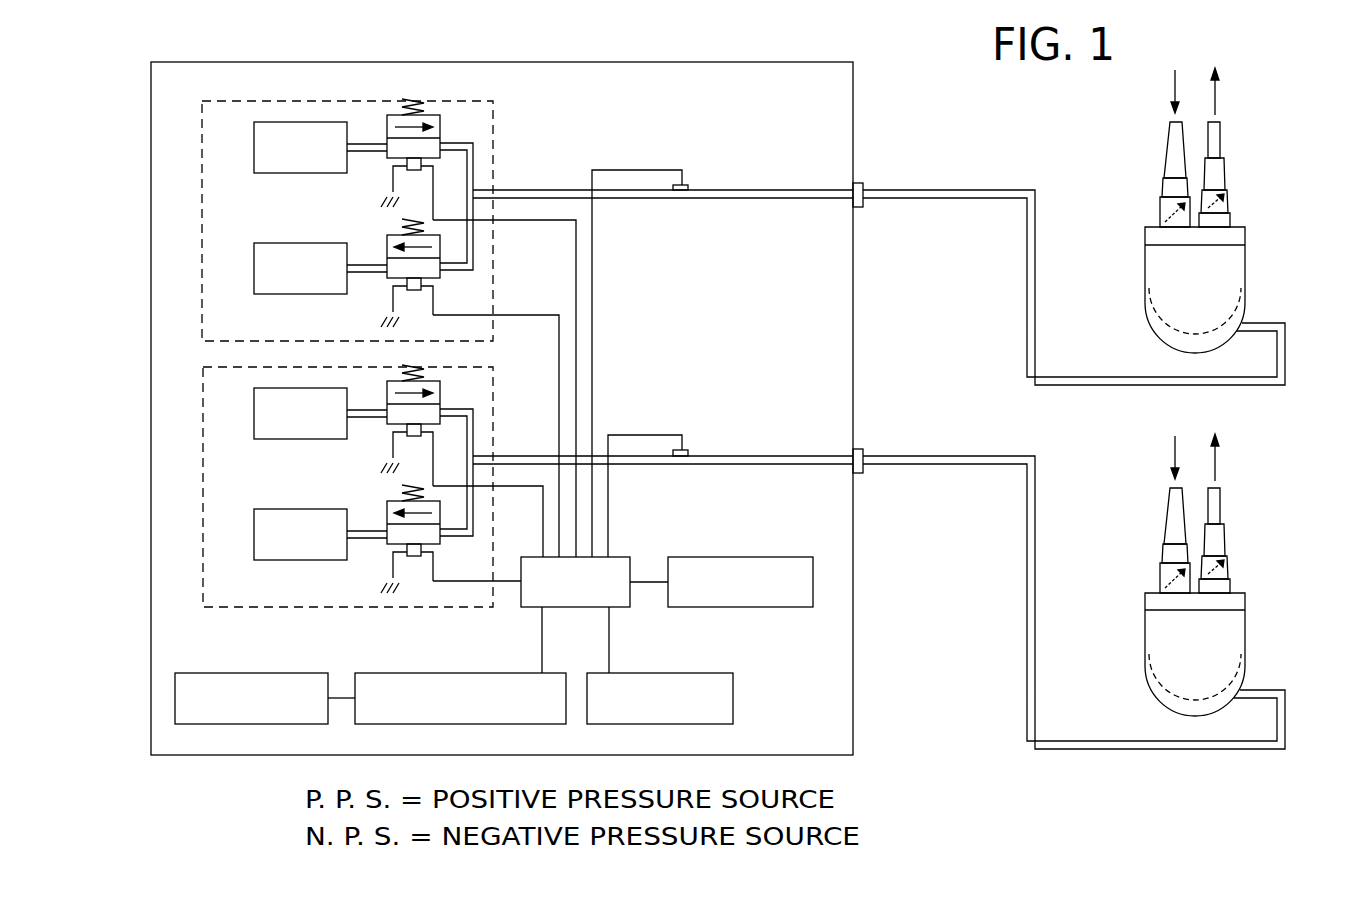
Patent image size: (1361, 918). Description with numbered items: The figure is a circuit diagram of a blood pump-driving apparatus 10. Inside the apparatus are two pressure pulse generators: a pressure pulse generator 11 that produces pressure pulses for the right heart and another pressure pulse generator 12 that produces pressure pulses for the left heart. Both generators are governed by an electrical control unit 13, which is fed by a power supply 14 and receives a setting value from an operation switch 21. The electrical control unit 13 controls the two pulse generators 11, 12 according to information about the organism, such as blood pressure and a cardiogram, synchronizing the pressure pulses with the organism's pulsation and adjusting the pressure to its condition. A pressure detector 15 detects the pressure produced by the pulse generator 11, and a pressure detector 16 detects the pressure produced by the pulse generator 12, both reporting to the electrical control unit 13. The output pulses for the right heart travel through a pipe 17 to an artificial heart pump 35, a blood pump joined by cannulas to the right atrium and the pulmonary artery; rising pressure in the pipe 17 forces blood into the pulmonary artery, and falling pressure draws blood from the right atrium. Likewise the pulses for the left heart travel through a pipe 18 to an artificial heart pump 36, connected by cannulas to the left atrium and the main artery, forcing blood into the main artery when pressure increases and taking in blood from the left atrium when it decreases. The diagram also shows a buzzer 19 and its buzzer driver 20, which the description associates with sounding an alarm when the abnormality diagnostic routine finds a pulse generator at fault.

The blood pump-driving apparatus 10 is at (853, 106).
The pressure pulse generator 11 is at (493, 147).
The pressure pulse generator 12 is at (493, 415).
The electrical control unit 13 is at (618, 557).
The power supply 14 is at (773, 557).
The pressure detector 15 is at (689, 185).
The pressure detector 16 is at (689, 450).
The pipe 17 is at (905, 188).
The pipe 18 is at (905, 455).
The buzzer 19 is at (268, 672).
The buzzer driver 20 is at (463, 672).
The operation switch 21 is at (682, 673).
The artificial heart pump 35 is at (1245, 268).
The artificial heart pump 36 is at (1245, 628).